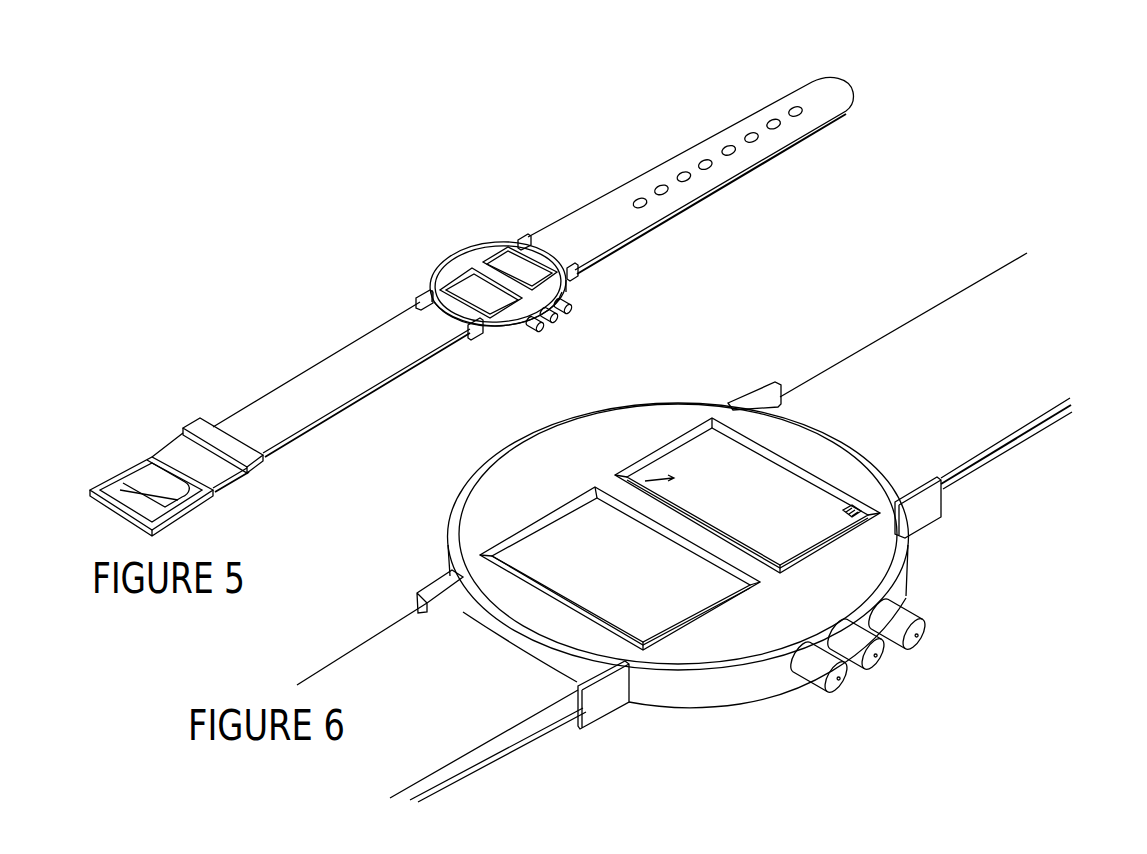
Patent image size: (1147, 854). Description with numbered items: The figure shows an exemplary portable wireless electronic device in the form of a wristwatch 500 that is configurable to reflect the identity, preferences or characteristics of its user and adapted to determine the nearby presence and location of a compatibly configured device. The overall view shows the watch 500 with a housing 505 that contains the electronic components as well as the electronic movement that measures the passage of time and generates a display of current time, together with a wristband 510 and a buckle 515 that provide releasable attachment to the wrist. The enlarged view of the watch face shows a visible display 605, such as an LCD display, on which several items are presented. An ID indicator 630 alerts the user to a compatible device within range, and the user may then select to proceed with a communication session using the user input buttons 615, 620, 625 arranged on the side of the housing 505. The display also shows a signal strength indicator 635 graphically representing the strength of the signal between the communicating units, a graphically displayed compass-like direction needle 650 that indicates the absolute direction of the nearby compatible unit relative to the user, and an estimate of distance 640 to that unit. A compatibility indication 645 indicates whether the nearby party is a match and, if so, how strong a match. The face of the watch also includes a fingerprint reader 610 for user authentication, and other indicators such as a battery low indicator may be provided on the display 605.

In FIG. 5, the wristwatch 500 is at (605, 282).
In FIG. 5, the housing 505 is at (452, 245).
In FIG. 6, the housing 505 is at (703, 710).
In FIG. 5, the wristband 510 is at (281, 362).
In FIG. 5, the buckle 515 is at (121, 462).
In FIG. 6, the visible display 605 is at (800, 432).
In FIG. 6, the fingerprint reader 610 is at (553, 555).
In FIG. 6, the user input button 615 is at (922, 650).
In FIG. 6, the user input button 620 is at (880, 672).
In FIG. 6, the user input button 625 is at (835, 700).
In FIG. 6, the ID indicator 630 is at (713, 427).
In FIG. 6, the signal strength indicator 635 is at (846, 510).
In FIG. 6, the estimate of distance 640 is at (812, 548).
In FIG. 6, the compatibility indication 645 is at (735, 527).
In FIG. 6, the compass-like direction needle 650 is at (660, 472).